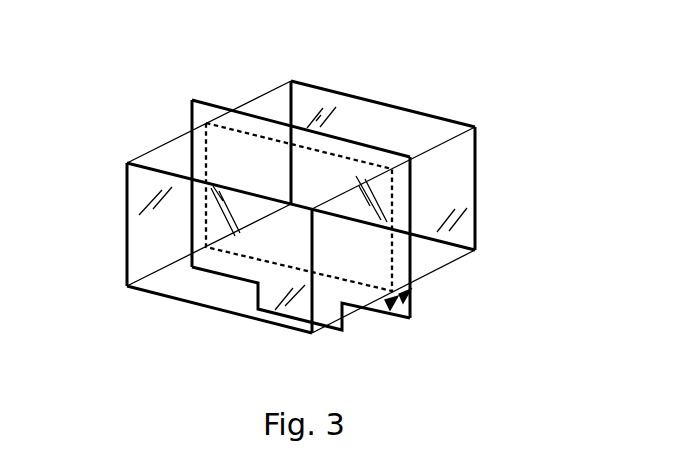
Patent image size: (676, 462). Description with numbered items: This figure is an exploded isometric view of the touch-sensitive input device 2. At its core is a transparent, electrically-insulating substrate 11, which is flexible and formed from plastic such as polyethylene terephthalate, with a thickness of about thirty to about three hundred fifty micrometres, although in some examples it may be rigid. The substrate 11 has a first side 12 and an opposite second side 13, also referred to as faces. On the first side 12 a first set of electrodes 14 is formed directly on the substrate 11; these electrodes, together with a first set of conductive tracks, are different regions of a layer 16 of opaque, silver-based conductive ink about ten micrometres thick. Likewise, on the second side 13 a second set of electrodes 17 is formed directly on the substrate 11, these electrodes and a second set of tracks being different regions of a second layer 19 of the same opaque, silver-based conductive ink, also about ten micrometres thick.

The touch-sensitive input device 2 is at (274, 51).
The substrate 11 is at (411, 307).
The first side 12 is at (386, 311).
The second side 13 is at (412, 293).
The first set of electrodes 14 is at (127, 261).
The layer 16 is at (303, 351).
The second set of electrodes 17 is at (476, 229).
The layer 19 is at (500, 251).